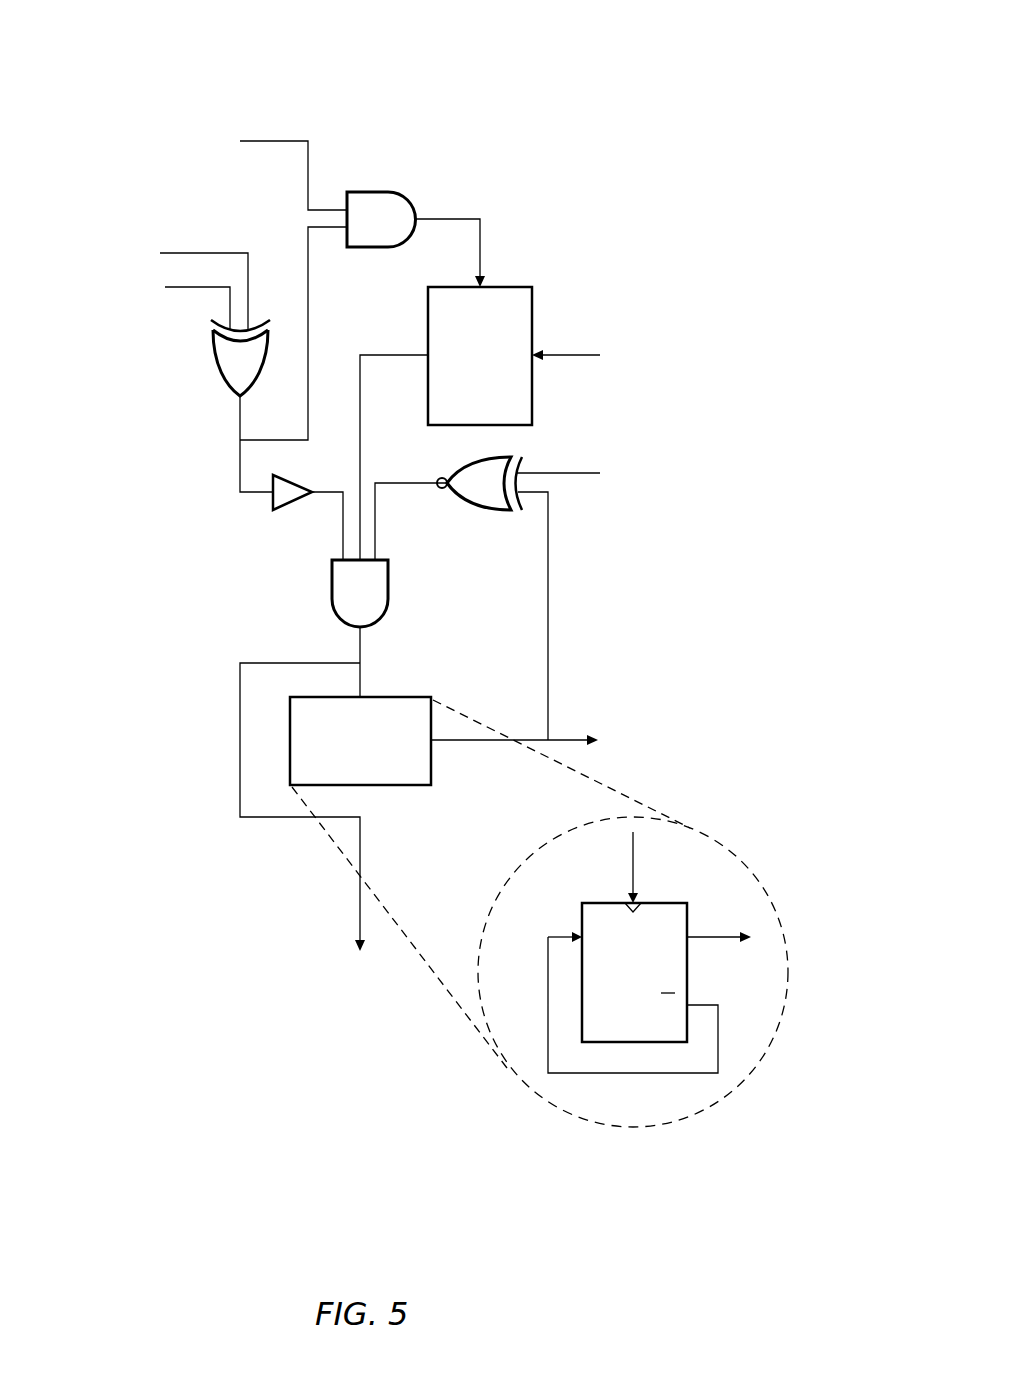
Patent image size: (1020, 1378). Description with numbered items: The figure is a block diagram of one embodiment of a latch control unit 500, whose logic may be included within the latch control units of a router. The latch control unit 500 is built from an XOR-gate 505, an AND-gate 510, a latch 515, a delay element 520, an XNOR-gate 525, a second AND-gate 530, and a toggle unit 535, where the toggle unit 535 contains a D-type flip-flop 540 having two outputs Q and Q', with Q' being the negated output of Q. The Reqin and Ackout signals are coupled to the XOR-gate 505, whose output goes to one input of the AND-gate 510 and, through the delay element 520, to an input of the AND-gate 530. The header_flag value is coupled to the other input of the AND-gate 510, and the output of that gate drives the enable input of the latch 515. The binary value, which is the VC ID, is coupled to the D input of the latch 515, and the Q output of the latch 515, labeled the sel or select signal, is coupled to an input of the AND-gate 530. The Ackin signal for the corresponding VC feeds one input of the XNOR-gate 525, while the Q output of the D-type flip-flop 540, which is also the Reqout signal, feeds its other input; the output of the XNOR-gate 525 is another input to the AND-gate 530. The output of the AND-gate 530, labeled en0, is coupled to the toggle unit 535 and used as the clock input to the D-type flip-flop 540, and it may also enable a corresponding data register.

The latch control unit 500 is at (556, 60).
The XOR-gate 505 is at (211, 353).
The AND-gate 510 is at (378, 192).
The latch 515 is at (480, 356).
The delay element 520 is at (294, 509).
The XNOR-gate 525 is at (486, 513).
The AND-gate 530 is at (391, 595).
The toggle unit 535 is at (360, 741).
The D-type flip-flop 540 is at (649, 952).